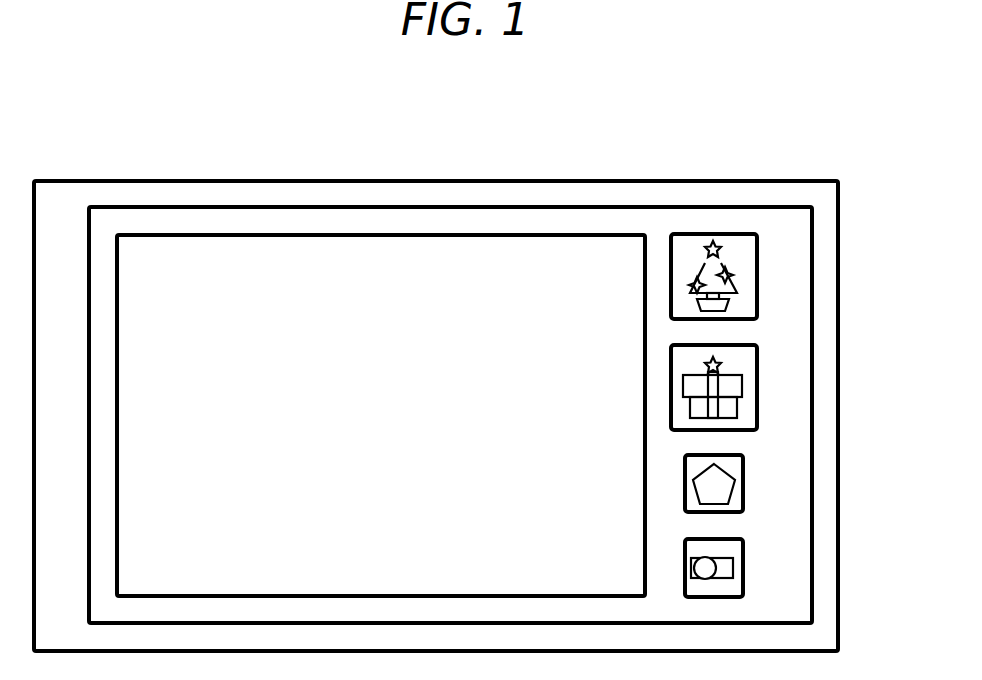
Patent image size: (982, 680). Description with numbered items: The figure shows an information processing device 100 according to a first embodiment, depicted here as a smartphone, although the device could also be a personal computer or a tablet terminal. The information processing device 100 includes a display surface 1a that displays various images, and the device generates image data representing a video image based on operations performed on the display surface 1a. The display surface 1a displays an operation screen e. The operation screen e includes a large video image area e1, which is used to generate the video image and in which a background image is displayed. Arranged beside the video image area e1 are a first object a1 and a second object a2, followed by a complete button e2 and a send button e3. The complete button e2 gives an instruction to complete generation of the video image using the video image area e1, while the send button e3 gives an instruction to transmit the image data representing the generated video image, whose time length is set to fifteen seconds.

The information processing device 100 is at (713, 121).
The display surface 1a is at (147, 205).
The operation screen e is at (220, 217).
The video image area e1 is at (393, 262).
The first object a1 is at (757, 273).
The second object a2 is at (757, 385).
The complete button e2 is at (743, 485).
The send button e3 is at (743, 575).